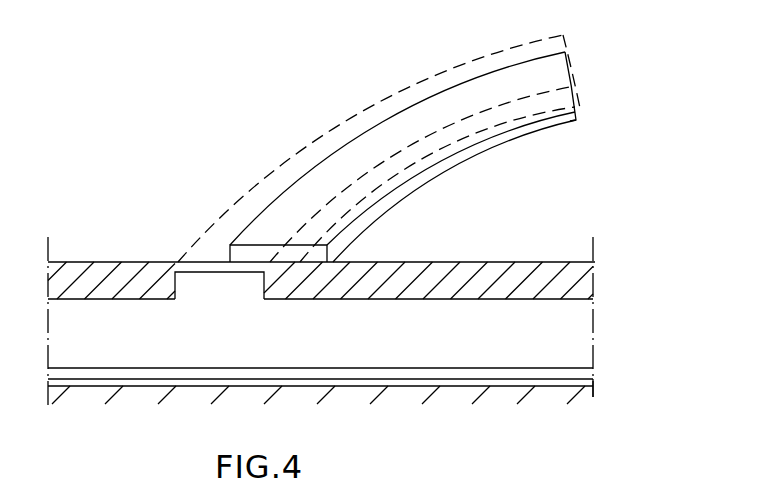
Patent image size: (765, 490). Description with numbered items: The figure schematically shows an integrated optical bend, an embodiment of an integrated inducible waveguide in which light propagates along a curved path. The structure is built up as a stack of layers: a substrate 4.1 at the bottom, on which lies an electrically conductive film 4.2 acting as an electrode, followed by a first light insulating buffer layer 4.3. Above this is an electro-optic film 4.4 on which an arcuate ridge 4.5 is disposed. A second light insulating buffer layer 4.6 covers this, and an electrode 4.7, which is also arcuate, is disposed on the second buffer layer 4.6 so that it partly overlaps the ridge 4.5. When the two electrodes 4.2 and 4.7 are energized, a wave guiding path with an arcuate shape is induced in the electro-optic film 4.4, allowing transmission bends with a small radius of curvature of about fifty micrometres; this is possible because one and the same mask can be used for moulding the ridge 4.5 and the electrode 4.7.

The substrate 4.1 is at (548, 388).
The electrically conductive film 4.2 is at (413, 386).
The first light insulating buffer layer 4.3 is at (495, 368).
The electro-optic film 4.4 is at (558, 342).
The ridge 4.5 is at (200, 287).
The second light insulating buffer layer 4.6 is at (542, 275).
The electrode 4.7 is at (550, 75).